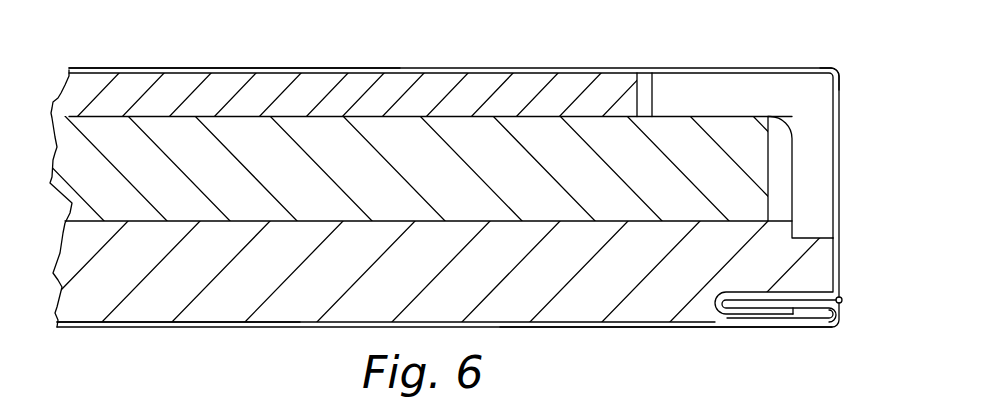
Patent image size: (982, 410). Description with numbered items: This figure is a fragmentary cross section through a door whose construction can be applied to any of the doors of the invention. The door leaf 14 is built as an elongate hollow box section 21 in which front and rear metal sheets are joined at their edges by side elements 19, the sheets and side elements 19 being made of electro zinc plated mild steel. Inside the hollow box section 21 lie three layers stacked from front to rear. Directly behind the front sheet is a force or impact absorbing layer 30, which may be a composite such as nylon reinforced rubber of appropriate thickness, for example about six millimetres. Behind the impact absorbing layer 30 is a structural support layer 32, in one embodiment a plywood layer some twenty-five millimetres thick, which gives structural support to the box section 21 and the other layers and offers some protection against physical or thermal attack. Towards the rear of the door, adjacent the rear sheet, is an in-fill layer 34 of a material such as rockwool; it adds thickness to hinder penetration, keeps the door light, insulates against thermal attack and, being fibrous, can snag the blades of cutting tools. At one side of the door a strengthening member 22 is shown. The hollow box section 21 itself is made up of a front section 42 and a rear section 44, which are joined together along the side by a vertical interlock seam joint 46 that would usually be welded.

The door leaf 14 is at (97, 328).
The side element 19 is at (842, 163).
The hollow box section 21 is at (804, 64).
The strengthening member 22 is at (722, 103).
The force or impact absorbing layer 30 is at (292, 88).
The structural support layer 32 is at (346, 147).
The in-fill layer 34 is at (173, 282).
The front section 42 is at (450, 67).
The rear section 44 is at (623, 328).
The vertical interlock seam joint 46 is at (846, 312).